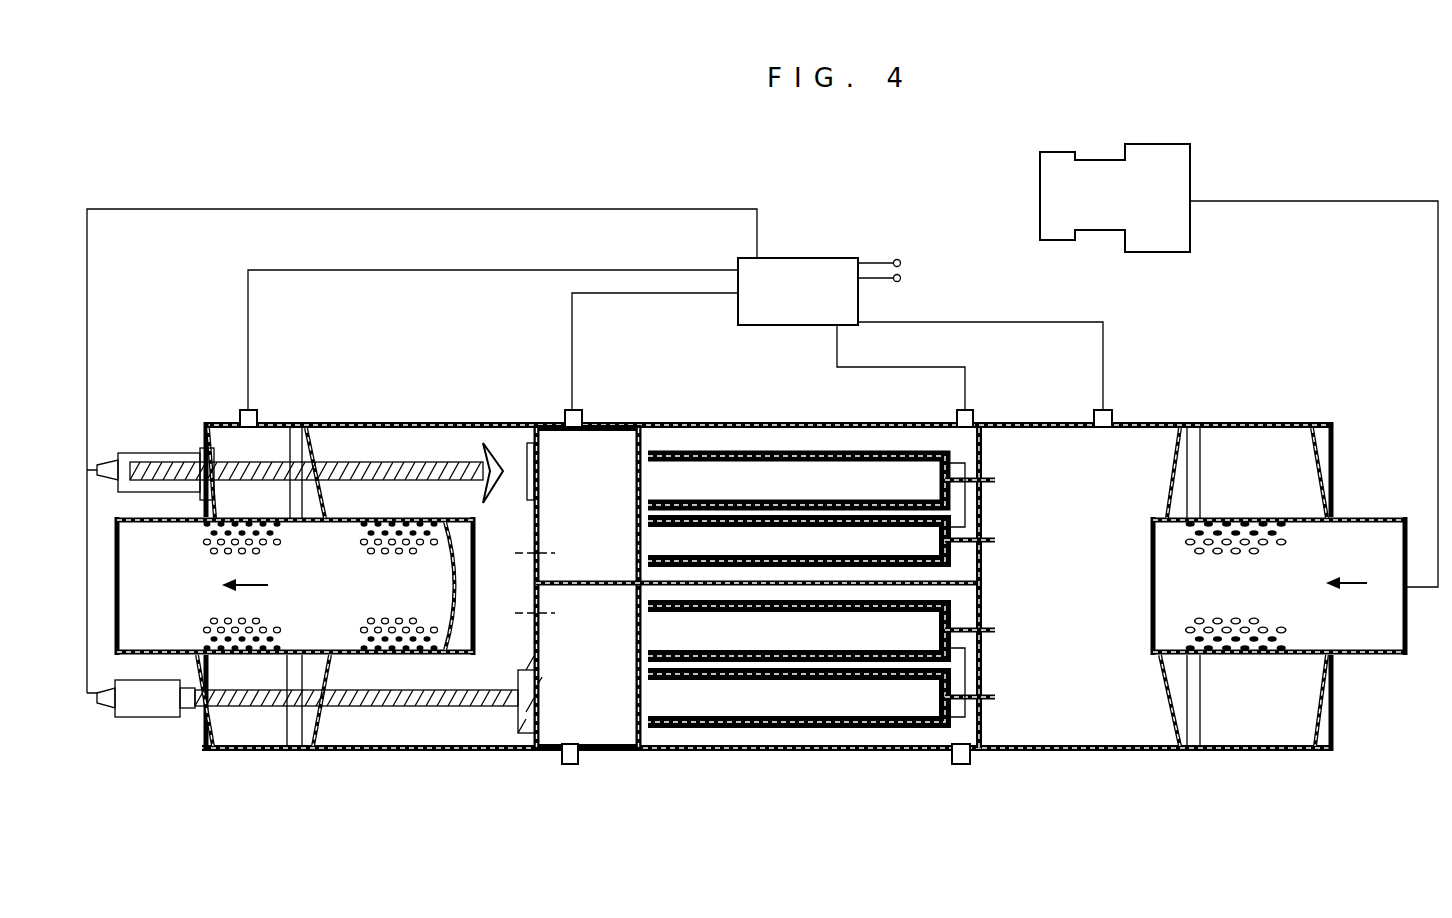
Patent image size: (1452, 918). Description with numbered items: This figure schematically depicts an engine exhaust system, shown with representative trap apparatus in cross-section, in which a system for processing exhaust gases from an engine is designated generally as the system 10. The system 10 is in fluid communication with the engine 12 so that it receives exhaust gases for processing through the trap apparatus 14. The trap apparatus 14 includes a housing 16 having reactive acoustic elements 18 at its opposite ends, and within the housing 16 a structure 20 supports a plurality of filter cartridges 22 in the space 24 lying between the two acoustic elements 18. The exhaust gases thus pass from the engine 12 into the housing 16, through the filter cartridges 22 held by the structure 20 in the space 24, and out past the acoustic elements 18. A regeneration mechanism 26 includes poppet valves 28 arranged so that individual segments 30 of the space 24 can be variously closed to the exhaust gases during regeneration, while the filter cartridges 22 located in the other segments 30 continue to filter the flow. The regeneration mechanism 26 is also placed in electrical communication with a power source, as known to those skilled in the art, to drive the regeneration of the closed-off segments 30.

The system for processing exhaust gases 10 is at (398, 182).
The engine 12 is at (1050, 192).
The trap apparatus 14 is at (475, 752).
The housing 16 is at (362, 422).
The reactive acoustic elements 18 is at (258, 677).
The structure for supporting filter cartridges 20 is at (1000, 710).
The filter cartridges 22 is at (800, 725).
The space 24 is at (1112, 717).
The regeneration mechanism 26 is at (785, 260).
The poppet valves 28 is at (363, 700).
The segments 30 is at (607, 460).